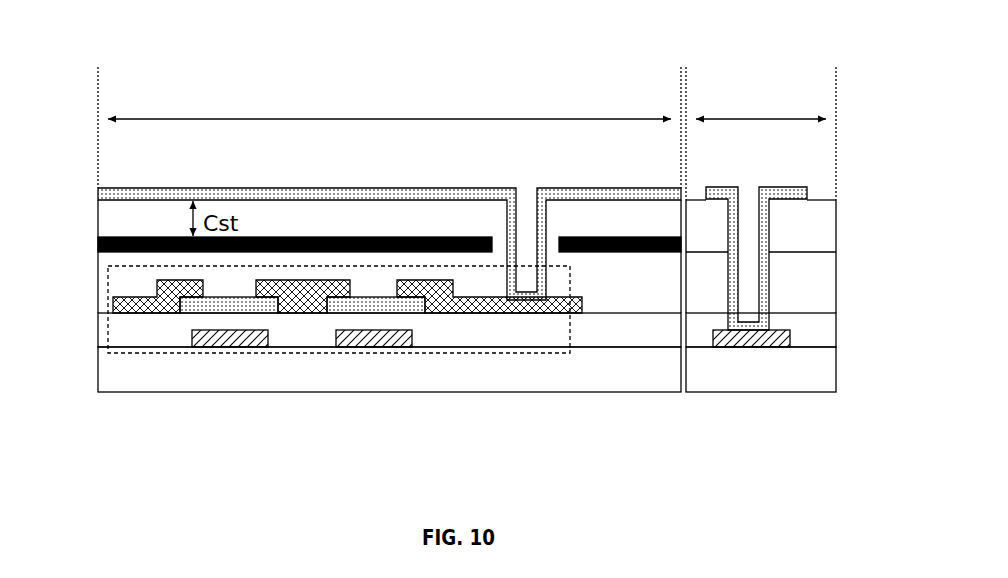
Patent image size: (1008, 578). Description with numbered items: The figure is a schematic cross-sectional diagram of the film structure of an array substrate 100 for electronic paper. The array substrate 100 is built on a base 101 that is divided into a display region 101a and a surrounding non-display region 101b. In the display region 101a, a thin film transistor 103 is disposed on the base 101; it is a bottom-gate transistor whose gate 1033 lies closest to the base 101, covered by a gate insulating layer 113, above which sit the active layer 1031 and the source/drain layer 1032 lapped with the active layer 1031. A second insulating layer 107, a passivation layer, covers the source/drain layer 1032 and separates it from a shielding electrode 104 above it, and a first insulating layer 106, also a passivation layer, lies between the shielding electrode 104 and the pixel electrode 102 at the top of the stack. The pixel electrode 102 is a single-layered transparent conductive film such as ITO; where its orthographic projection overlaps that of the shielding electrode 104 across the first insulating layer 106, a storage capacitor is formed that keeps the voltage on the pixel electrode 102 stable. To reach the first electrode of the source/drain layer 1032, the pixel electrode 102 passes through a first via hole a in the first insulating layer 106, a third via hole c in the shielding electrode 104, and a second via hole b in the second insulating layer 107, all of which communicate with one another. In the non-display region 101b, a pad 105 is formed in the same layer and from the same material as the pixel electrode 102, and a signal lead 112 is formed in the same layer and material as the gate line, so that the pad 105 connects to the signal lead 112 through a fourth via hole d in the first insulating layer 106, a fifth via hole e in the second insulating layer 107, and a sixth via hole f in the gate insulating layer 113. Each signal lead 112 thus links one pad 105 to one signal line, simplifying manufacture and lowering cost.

The array substrate 100 is at (100, 53).
The base 101 is at (120, 372).
The display region 101a is at (389, 127).
The non-display region 101b is at (761, 132).
The pixel electrode 102 is at (120, 195).
The thin film transistor 103 is at (563, 353).
The active layer 1031 is at (232, 314).
The source/drain layer 1032 is at (151, 314).
The gate 1033 is at (202, 348).
The shielding electrode 104 is at (98, 245).
The pad 105 is at (809, 192).
The first insulating layer 106 is at (112, 221).
The second insulating layer 107 is at (103, 276).
The signal lead 112 is at (792, 338).
The gate insulating layer 113 is at (103, 333).
The first via hole a is at (548, 229).
The second via hole b is at (548, 293).
The third via hole c is at (492, 240).
The fourth via hole d is at (770, 233).
The fifth via hole e is at (770, 288).
The sixth via hole f is at (770, 318).